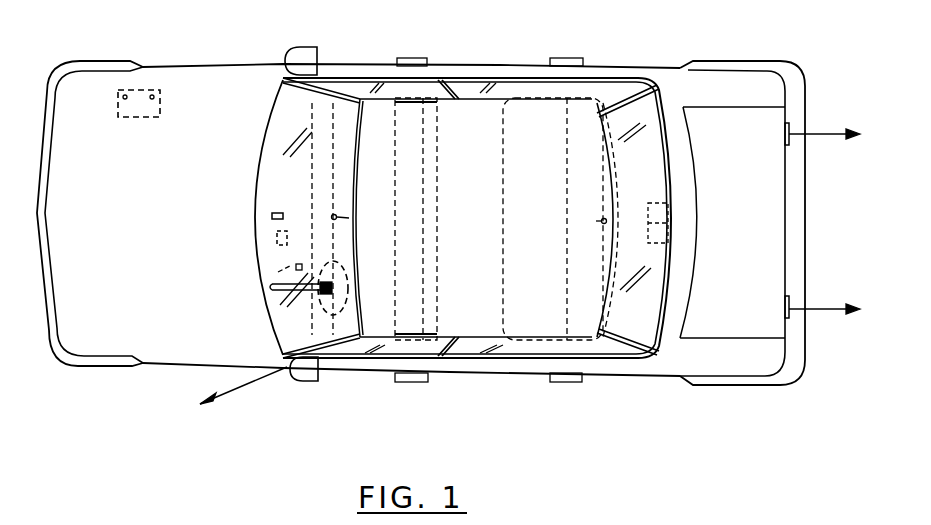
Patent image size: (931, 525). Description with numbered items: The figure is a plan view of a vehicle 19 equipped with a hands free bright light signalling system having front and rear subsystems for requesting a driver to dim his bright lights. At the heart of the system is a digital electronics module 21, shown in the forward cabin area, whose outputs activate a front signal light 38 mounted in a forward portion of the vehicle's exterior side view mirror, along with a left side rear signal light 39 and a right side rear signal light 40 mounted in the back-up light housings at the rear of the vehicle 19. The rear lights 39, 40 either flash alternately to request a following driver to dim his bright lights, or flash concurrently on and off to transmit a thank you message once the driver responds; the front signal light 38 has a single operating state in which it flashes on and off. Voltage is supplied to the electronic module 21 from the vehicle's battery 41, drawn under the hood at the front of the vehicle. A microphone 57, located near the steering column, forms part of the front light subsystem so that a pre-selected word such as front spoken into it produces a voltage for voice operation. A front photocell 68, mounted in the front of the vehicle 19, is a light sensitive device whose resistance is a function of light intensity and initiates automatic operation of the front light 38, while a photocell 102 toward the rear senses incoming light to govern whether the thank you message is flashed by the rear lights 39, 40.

The battery 41 is at (150, 90).
The front photocell 68 is at (273, 213).
The digital electronics module 21 is at (275, 240).
The microphone 57 is at (268, 285).
The front signal light 38 is at (293, 375).
The vehicle 19 is at (606, 376).
The photocell 102 is at (614, 200).
The right side rear signal light 40 is at (792, 140).
The left side rear signal light 39 is at (792, 313).